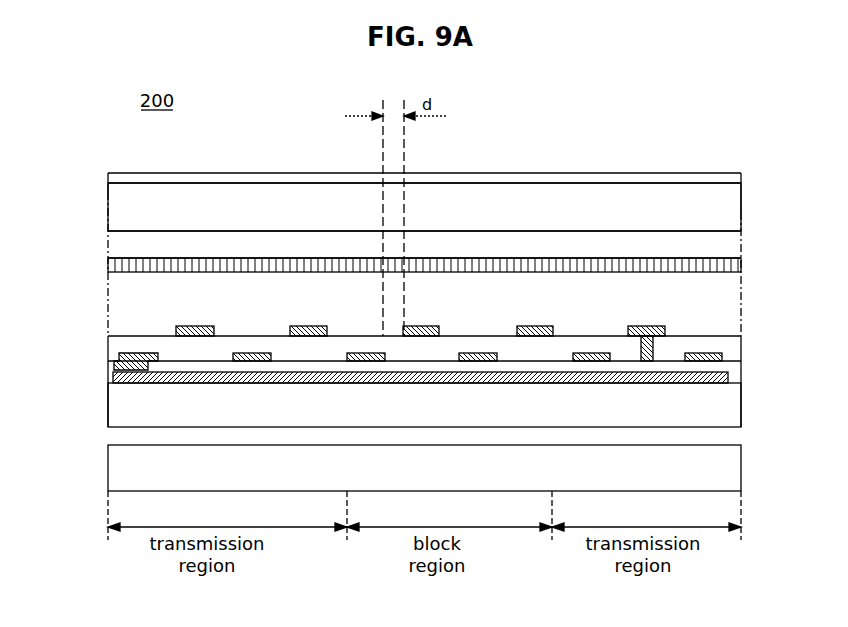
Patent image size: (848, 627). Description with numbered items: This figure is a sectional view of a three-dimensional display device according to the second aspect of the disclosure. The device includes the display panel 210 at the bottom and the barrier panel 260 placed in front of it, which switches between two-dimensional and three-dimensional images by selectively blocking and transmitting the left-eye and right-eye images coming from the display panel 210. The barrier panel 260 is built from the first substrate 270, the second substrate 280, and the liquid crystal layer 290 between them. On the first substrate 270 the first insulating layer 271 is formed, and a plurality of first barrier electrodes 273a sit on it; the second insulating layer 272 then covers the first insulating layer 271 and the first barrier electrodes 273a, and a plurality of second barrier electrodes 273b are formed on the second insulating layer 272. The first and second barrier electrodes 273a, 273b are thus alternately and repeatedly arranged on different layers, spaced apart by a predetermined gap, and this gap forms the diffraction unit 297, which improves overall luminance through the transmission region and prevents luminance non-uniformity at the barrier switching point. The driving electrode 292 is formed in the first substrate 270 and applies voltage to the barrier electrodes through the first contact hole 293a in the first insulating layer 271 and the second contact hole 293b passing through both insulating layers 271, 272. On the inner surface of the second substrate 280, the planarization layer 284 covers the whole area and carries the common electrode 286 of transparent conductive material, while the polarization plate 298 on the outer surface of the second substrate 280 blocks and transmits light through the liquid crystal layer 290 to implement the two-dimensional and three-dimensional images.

The display panel 210 is at (745, 470).
The barrier panel 260 is at (127, 207).
The first substrate 270 is at (745, 407).
The first insulating layer 271 is at (735, 373).
The second insulating layer 272 is at (745, 347).
The first barrier electrodes 273a is at (587, 353).
The second barrier electrodes 273b is at (647, 326).
The second substrate 280 is at (745, 212).
The planarization layer 284 is at (745, 244).
The common electrode 286 is at (745, 266).
The liquid crystal layer 290 is at (735, 300).
The driving electrode 292 is at (112, 380).
The first contact hole 293a is at (118, 366).
The second contact hole 293b is at (668, 345).
The diffraction unit 297 is at (282, 360).
The polarization plate 298 is at (745, 176).